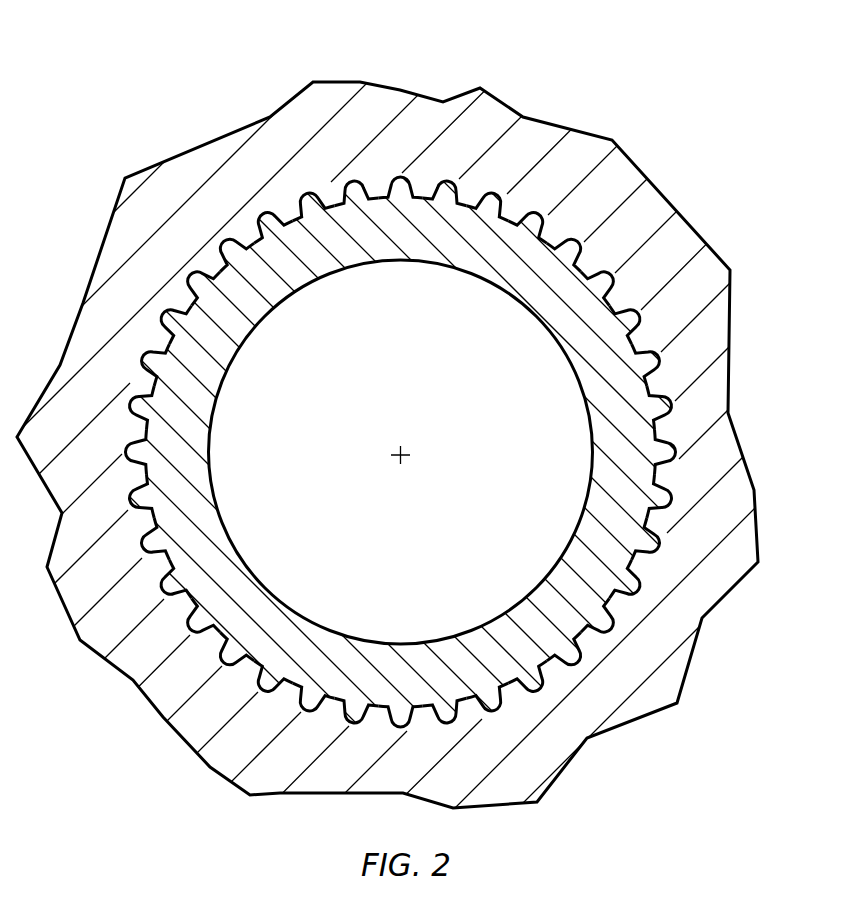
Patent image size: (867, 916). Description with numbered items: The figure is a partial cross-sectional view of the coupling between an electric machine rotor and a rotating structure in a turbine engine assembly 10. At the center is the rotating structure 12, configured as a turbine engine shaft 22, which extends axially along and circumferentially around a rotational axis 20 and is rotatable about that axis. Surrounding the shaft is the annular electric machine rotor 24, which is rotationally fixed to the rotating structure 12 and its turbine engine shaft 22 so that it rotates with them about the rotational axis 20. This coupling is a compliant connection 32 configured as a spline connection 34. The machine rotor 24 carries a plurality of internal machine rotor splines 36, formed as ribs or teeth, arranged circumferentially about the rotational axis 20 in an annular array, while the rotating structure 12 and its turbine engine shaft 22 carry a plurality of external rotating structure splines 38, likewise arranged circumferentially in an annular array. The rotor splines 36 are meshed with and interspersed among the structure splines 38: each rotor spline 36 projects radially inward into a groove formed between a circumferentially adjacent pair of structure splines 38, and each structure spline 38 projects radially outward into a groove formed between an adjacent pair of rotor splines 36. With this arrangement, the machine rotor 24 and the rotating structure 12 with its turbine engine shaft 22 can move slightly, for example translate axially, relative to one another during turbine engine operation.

The turbine engine assembly 10 is at (409, 415).
The rotating structure 12 is at (401, 452).
The rotational axis 20 is at (401, 468).
The turbine engine shaft 22 is at (580, 396).
The electric machine rotor 24 is at (735, 362).
The compliant connection 32 is at (377, 409).
The spline connection 34 is at (377, 409).
The machine rotor splines 36 is at (377, 442).
The rotating structure splines 38 is at (641, 308).